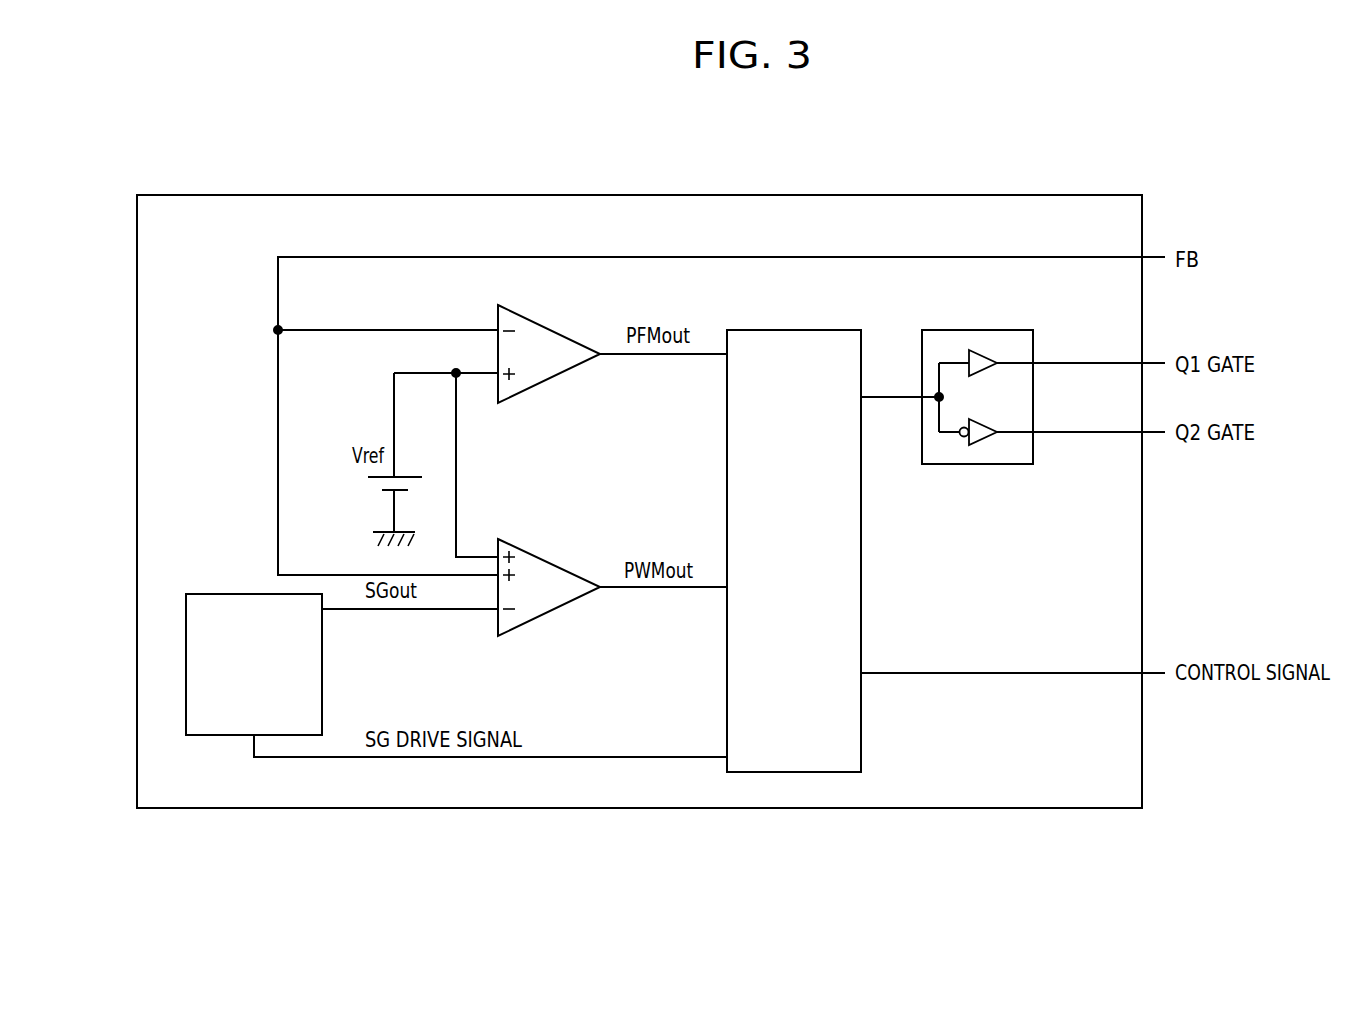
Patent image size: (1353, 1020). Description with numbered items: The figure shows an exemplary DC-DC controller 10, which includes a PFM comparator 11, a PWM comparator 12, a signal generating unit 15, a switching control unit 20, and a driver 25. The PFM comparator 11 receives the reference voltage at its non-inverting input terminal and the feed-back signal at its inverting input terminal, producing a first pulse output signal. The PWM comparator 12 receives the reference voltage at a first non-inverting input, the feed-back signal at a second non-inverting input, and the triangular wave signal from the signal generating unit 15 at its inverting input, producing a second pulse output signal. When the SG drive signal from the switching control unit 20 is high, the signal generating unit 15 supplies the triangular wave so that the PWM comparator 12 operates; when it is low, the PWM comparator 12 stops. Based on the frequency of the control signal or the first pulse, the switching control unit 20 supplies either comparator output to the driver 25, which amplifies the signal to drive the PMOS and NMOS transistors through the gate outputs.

The DC-DC controller 10 is at (238, 195).
The PFM comparator 11 is at (543, 383).
The PWM comparator 12 is at (535, 618).
The signal generating unit 15 is at (212, 593).
The switching control unit 20 is at (795, 330).
The driver 25 is at (973, 465).